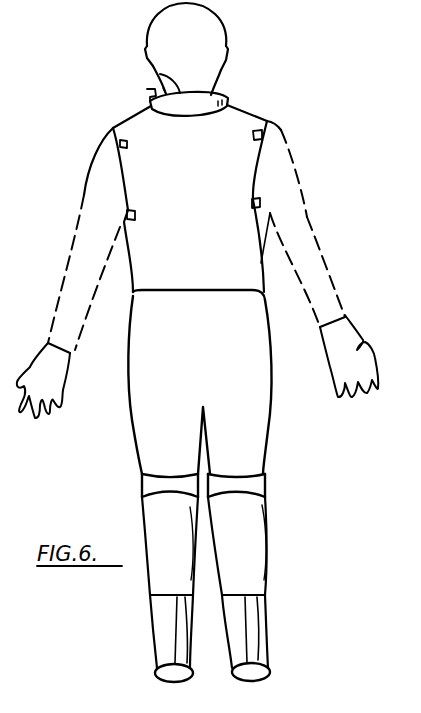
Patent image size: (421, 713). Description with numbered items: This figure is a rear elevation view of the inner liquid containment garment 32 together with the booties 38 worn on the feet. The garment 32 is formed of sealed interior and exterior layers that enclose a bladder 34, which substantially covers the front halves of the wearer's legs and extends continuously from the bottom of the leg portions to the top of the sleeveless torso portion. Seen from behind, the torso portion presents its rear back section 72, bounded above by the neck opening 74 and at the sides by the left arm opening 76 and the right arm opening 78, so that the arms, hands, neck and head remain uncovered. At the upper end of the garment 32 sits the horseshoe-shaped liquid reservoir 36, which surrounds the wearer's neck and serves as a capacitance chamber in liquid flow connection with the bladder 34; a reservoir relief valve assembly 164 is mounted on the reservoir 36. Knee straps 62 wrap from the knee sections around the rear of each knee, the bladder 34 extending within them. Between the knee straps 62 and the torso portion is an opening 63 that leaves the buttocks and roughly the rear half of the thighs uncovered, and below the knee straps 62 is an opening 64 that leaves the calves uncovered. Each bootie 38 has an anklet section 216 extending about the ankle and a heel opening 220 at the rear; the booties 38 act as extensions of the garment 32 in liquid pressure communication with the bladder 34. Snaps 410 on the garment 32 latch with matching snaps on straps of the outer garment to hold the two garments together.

The inner liquid containment garment 32 is at (265, 267).
The bladder 34 is at (236, 118).
The liquid reservoir 36 is at (205, 100).
The booties 38 is at (148, 623).
The knee straps 62 is at (152, 486).
The opening 63 is at (228, 393).
The opening 64 is at (187, 542).
The rear back section 72 is at (199, 207).
The neck opening 74 is at (158, 74).
The left arm opening 76 is at (123, 176).
The right arm opening 78 is at (260, 176).
The reservoir relief valve assembly 164 is at (147, 90).
The anklet section 216 is at (157, 645).
The heel opening 220 is at (163, 677).
The snaps 410 is at (253, 135).